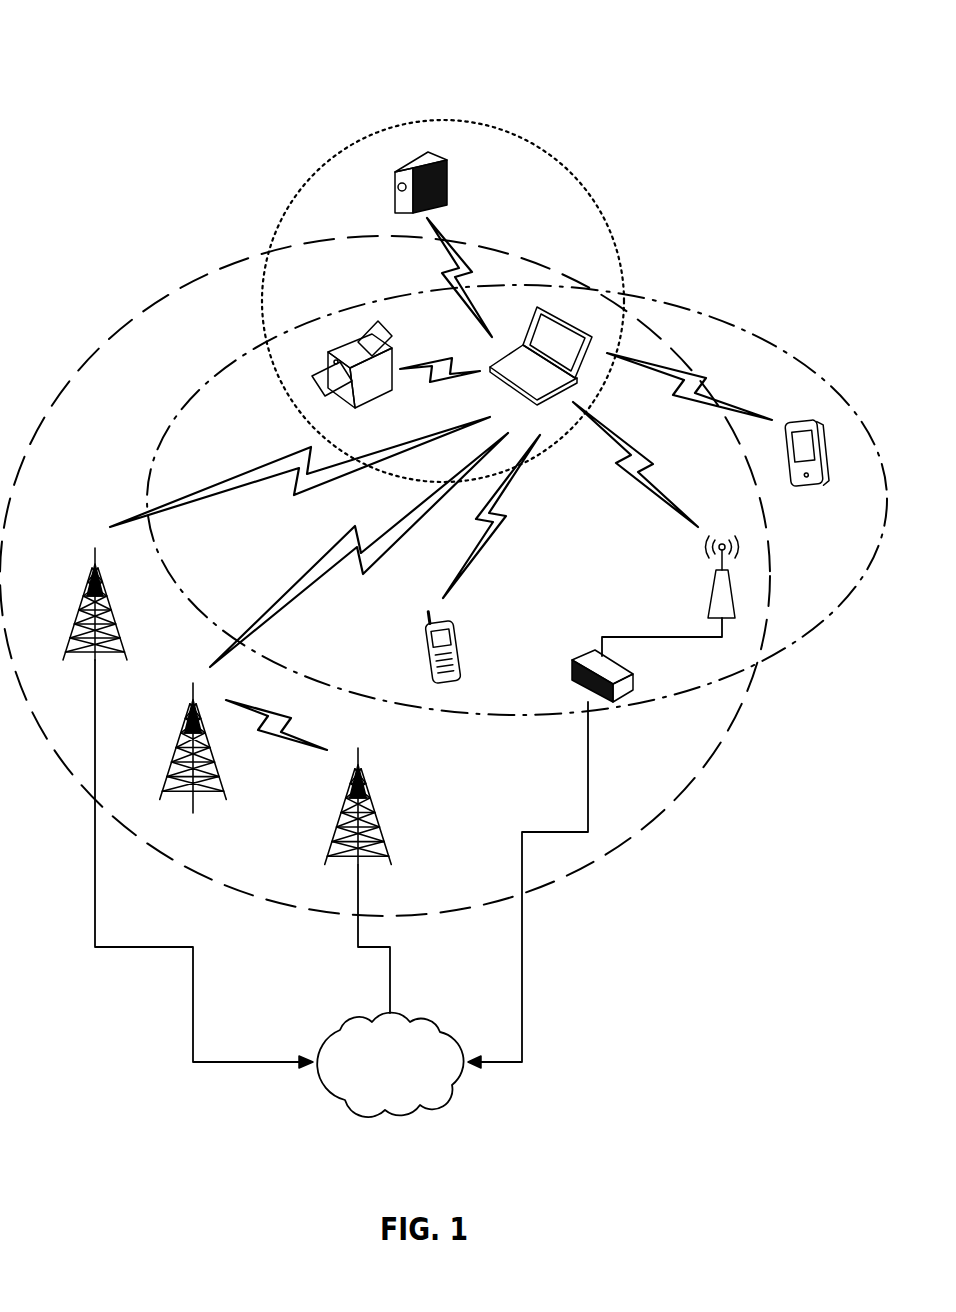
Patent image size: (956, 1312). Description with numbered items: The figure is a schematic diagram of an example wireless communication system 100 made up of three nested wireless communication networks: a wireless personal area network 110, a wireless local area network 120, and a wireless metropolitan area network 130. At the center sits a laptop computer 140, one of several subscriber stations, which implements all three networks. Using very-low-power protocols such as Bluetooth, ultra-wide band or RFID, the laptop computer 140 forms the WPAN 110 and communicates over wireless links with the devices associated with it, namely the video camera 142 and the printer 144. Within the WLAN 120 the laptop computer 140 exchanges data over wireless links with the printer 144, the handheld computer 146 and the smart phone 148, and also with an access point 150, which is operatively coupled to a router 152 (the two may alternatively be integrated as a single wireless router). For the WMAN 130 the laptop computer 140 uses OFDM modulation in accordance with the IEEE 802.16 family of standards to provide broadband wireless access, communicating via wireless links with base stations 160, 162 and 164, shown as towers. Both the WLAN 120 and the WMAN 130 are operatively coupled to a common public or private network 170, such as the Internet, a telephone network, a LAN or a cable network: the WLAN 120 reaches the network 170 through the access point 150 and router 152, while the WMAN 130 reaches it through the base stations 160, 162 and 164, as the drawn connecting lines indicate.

The wireless communication system 100 is at (93, 40).
The wireless personal area network (WPAN) 110 is at (440, 118).
The wireless local area network (WLAN) 120 is at (160, 490).
The wireless metropolitan area network (WMAN) 130 is at (190, 280).
The laptop computer 140 is at (547, 312).
The video camera 142 is at (439, 185).
The printer 144 is at (360, 402).
The handheld computer 146 is at (802, 420).
The smart phone 148 is at (450, 632).
The access point (AP) 150 is at (713, 594).
The router 152 is at (588, 660).
The base station 160 is at (88, 602).
The base station 162 is at (187, 733).
The base station 164 is at (352, 800).
The common public or private network 170 is at (343, 1028).